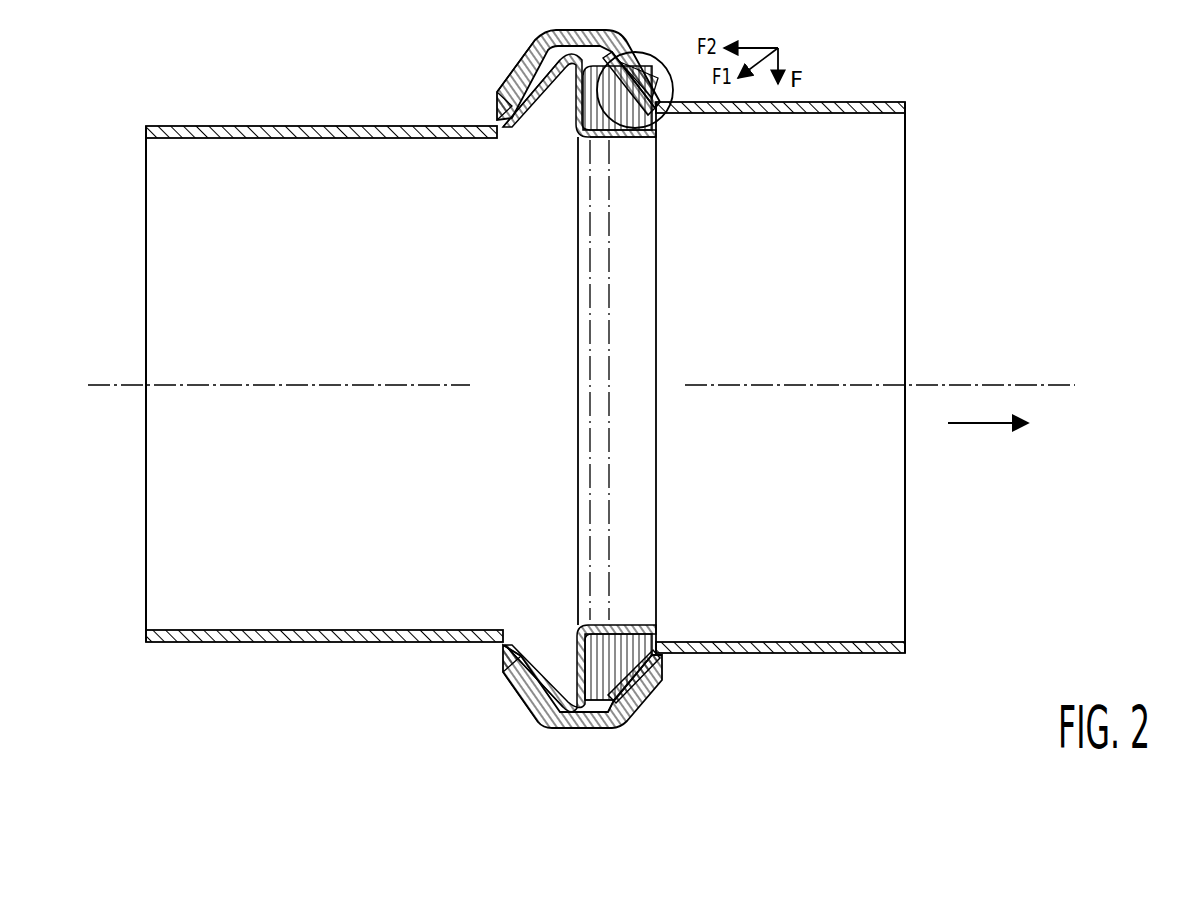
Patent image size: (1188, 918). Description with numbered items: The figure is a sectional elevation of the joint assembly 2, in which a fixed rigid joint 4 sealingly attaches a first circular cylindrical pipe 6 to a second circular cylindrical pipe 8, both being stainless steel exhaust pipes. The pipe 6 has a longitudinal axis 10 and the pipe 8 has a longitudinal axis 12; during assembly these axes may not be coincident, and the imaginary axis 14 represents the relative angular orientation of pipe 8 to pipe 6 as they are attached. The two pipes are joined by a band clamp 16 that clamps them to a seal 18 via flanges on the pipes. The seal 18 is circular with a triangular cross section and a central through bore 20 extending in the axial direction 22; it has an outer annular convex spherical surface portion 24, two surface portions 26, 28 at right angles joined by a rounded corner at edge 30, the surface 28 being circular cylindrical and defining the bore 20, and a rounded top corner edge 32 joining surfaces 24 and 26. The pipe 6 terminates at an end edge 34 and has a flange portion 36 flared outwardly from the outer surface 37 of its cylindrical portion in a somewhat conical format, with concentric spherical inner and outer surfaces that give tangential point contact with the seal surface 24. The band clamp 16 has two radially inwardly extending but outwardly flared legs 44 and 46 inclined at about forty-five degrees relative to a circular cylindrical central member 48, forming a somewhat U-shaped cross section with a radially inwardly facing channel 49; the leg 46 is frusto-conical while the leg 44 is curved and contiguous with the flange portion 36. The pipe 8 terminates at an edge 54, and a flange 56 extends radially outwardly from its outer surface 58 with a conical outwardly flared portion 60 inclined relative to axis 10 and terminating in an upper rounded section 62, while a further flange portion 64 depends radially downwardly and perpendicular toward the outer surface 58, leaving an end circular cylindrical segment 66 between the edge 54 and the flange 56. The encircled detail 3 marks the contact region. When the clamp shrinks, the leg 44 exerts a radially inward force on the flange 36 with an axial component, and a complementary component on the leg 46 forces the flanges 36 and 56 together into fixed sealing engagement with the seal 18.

The joint assembly 2 is at (460, 706).
The detail region 3 is at (664, 121).
The fixed rigid joint 4 is at (498, 680).
The first pipe 6 is at (801, 337).
The second pipe 8 is at (324, 340).
The longitudinal axis 10 is at (311, 383).
The longitudinal axis 12 is at (1000, 383).
The imaginary axis 14 is at (415, 350).
The band clamp 16 is at (492, 98).
The seal 18 is at (660, 130).
The central through bore 20 is at (640, 624).
The axial direction 22 is at (985, 424).
The outer annular convex spherical surface portion 24 is at (596, 669).
The surface portion 26 is at (559, 149).
The surface portion 28 is at (606, 134).
The edge 30 is at (577, 651).
The top corner edge 32 is at (603, 700).
The end edge 34 is at (610, 712).
The flange portion 36 is at (663, 650).
The outer surface 37 is at (898, 101).
The leg 44 is at (622, 47).
The leg 46 is at (508, 72).
The central member 48 is at (567, 732).
The channel 49 is at (540, 713).
The edge 54 is at (657, 288).
The flange 56 is at (558, 664).
The outer surface 58 is at (283, 124).
The outwardly flared portion 60 is at (533, 648).
The upper rounded section 62 is at (541, 61).
The flange portion 64 is at (573, 80).
The end circular cylindrical segment 66 is at (652, 436).